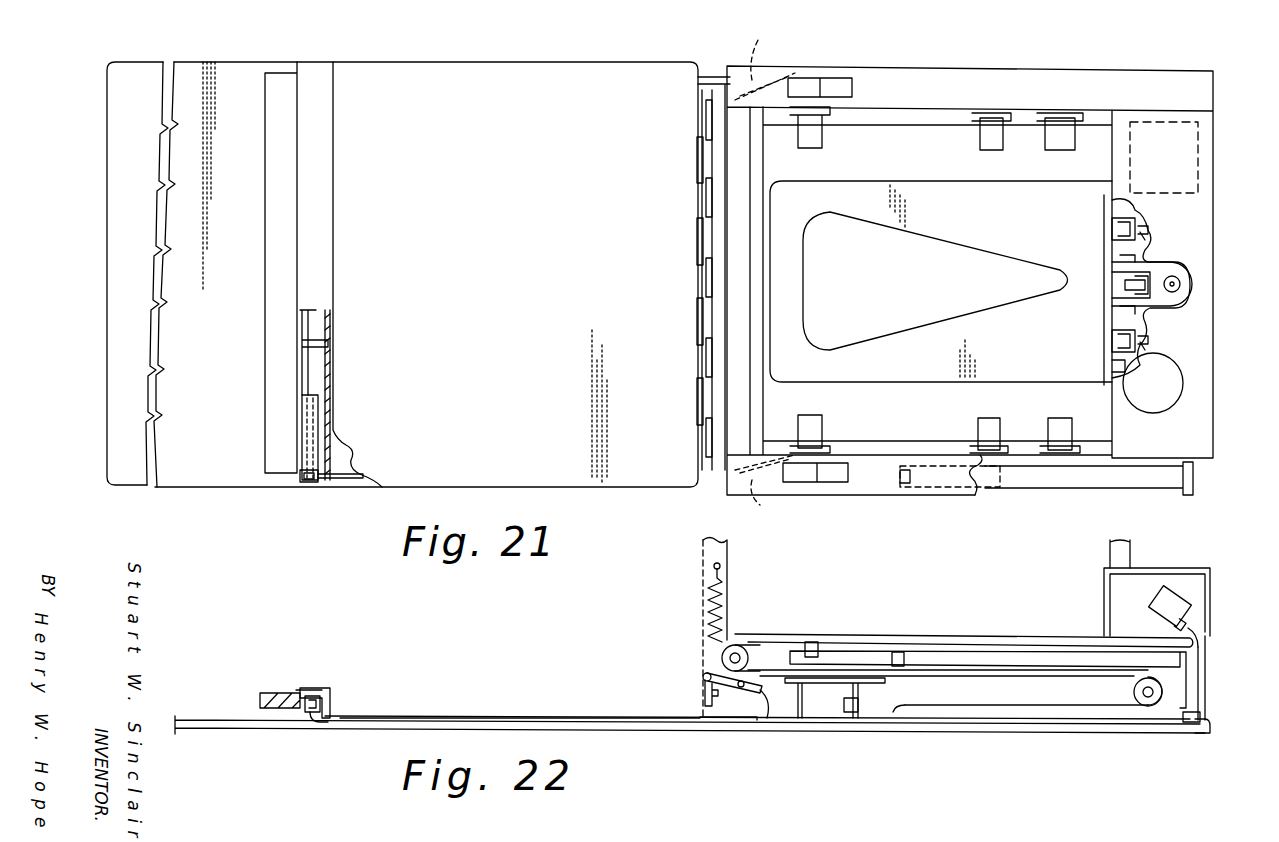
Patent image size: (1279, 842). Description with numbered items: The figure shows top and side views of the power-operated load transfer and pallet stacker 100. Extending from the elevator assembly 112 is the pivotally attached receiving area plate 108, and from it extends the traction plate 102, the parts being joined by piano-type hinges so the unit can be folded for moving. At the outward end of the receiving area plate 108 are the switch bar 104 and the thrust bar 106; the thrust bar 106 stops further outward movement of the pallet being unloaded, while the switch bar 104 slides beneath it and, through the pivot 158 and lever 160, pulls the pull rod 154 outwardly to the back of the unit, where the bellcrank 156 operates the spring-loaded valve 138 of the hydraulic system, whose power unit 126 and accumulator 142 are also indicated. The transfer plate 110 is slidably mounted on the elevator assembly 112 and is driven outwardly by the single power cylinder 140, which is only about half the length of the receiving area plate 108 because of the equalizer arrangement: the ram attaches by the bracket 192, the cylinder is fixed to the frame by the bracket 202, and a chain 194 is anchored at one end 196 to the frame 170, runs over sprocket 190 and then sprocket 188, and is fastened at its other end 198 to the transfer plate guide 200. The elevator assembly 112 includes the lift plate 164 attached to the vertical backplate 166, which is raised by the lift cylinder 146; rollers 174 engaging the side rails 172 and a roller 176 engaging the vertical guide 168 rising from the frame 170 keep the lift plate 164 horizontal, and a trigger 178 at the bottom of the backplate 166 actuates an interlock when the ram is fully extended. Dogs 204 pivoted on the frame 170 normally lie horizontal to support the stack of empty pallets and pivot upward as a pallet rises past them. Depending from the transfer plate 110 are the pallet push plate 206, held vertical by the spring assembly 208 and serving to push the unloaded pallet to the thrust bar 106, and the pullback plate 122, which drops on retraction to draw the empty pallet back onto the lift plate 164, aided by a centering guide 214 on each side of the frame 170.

In FIG. 21, the load transfer and pallet stacker 100 is at (522, 57).
In FIG. 22, the load transfer and pallet stacker 100 is at (658, 655).
In FIG. 22, the traction plate 102 is at (209, 718).
In FIG. 21, the switch bar 104 is at (302, 430).
In FIG. 22, the switch bar 104 is at (313, 700).
In FIG. 21, the thrust bar 106 is at (333, 257).
In FIG. 22, the thrust bar 106 is at (329, 690).
In FIG. 22, the receiving area plate 108 is at (548, 712).
In FIG. 22, the transfer plate 110 is at (702, 555).
In FIG. 22, the elevator assembly 112 is at (904, 632).
In FIG. 22, the pullback plate 122 is at (758, 730).
In FIG. 21, the power unit 126 is at (1200, 160).
In FIG. 22, the spring-loaded valve 138 is at (1192, 603).
In FIG. 21, the power cylinder 140 is at (1012, 478).
In FIG. 22, the power cylinder 140 is at (1036, 660).
In FIG. 21, the accumulator 142 is at (1184, 366).
In FIG. 21, the lift cylinder 146 is at (1194, 278).
In FIG. 21, the pull rod 154 is at (340, 482).
In FIG. 22, the pull rod 154 is at (442, 713).
In FIG. 22, the bellcrank 156 is at (1208, 722).
In FIG. 21, the pivot 158 is at (305, 364).
In FIG. 22, the pivot 158 is at (328, 702).
In FIG. 21, the lever 160 is at (300, 490).
In FIG. 22, the lever 160 is at (316, 724).
In FIG. 21, the lift plate 164 is at (963, 208).
In FIG. 21, the backplate 166 is at (1108, 213).
In FIG. 22, the backplate 166 is at (1105, 588).
In FIG. 21, the vertical guide 168 is at (1112, 280).
In FIG. 22, the vertical guide 168 is at (1110, 556).
In FIG. 22, the frame 170 is at (875, 738).
In FIG. 21, the side rails 172 is at (1140, 232).
In FIG. 21, the rollers 174 is at (1112, 228).
In FIG. 21, the roller 176 is at (1122, 292).
In FIG. 21, the trigger 178 is at (1112, 363).
In FIG. 22, the sprockets 188 is at (748, 656).
In FIG. 22, the sprockets 190 is at (1133, 691).
In FIG. 22, the bracket 192 is at (893, 658).
In FIG. 22, the chain 194 is at (980, 728).
In FIG. 22, the end 196 is at (834, 728).
In FIG. 22, the end 198 is at (812, 640).
In FIG. 21, the transfer plate guide 200 is at (1012, 67).
In FIG. 22, the bracket 202 is at (1202, 690).
In FIG. 21, the dogs 204 is at (815, 135).
In FIG. 22, the pallet push plate 206 is at (702, 700).
In FIG. 22, the spring assembly 208 is at (708, 606).
In FIG. 21, the guide 214 is at (767, 272).